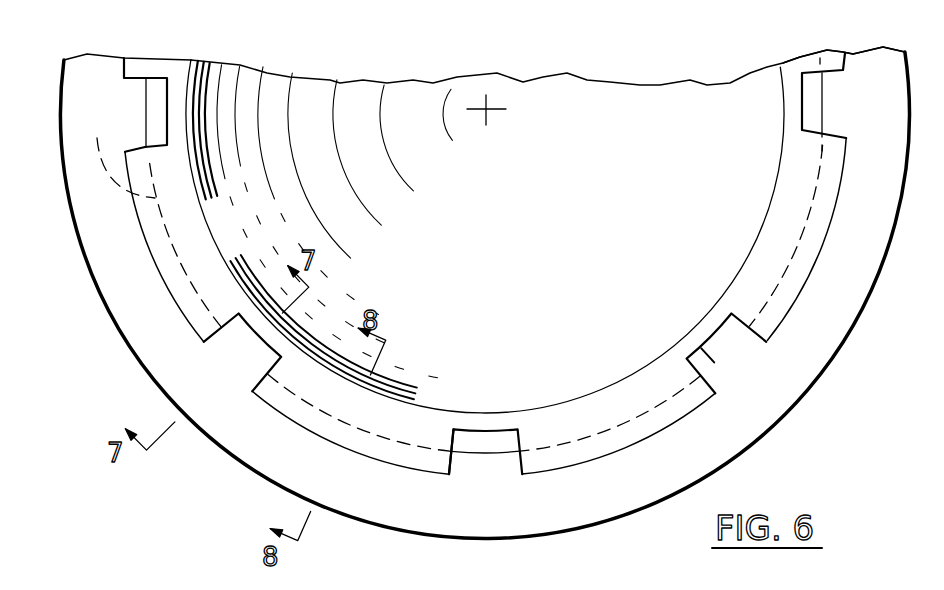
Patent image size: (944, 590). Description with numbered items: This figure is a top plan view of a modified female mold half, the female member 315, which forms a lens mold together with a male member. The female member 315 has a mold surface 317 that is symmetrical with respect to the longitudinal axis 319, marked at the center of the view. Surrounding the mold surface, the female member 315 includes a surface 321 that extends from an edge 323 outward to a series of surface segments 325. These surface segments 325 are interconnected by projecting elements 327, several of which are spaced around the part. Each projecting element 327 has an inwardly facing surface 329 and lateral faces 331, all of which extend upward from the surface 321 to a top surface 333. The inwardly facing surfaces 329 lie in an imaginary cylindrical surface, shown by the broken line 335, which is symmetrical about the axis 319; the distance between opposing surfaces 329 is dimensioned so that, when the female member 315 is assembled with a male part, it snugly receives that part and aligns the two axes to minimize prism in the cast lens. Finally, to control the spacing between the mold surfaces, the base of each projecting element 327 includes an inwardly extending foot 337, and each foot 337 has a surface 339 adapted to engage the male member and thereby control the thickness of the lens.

The female member 315 is at (172, 59).
The mold surface 317 is at (612, 205).
The longitudinal axis 319 is at (490, 120).
The surface 321 is at (205, 217).
The edge 323 is at (780, 168).
The surface segments 325 is at (162, 278).
The projecting elements 327 is at (733, 357).
The inwardly facing surface 329 is at (703, 348).
The lateral faces 331 is at (767, 340).
The top surface 333 is at (890, 196).
The broken line 335 is at (448, 281).
The inwardly extending foot 337 is at (468, 432).
The surface 339 is at (493, 443).